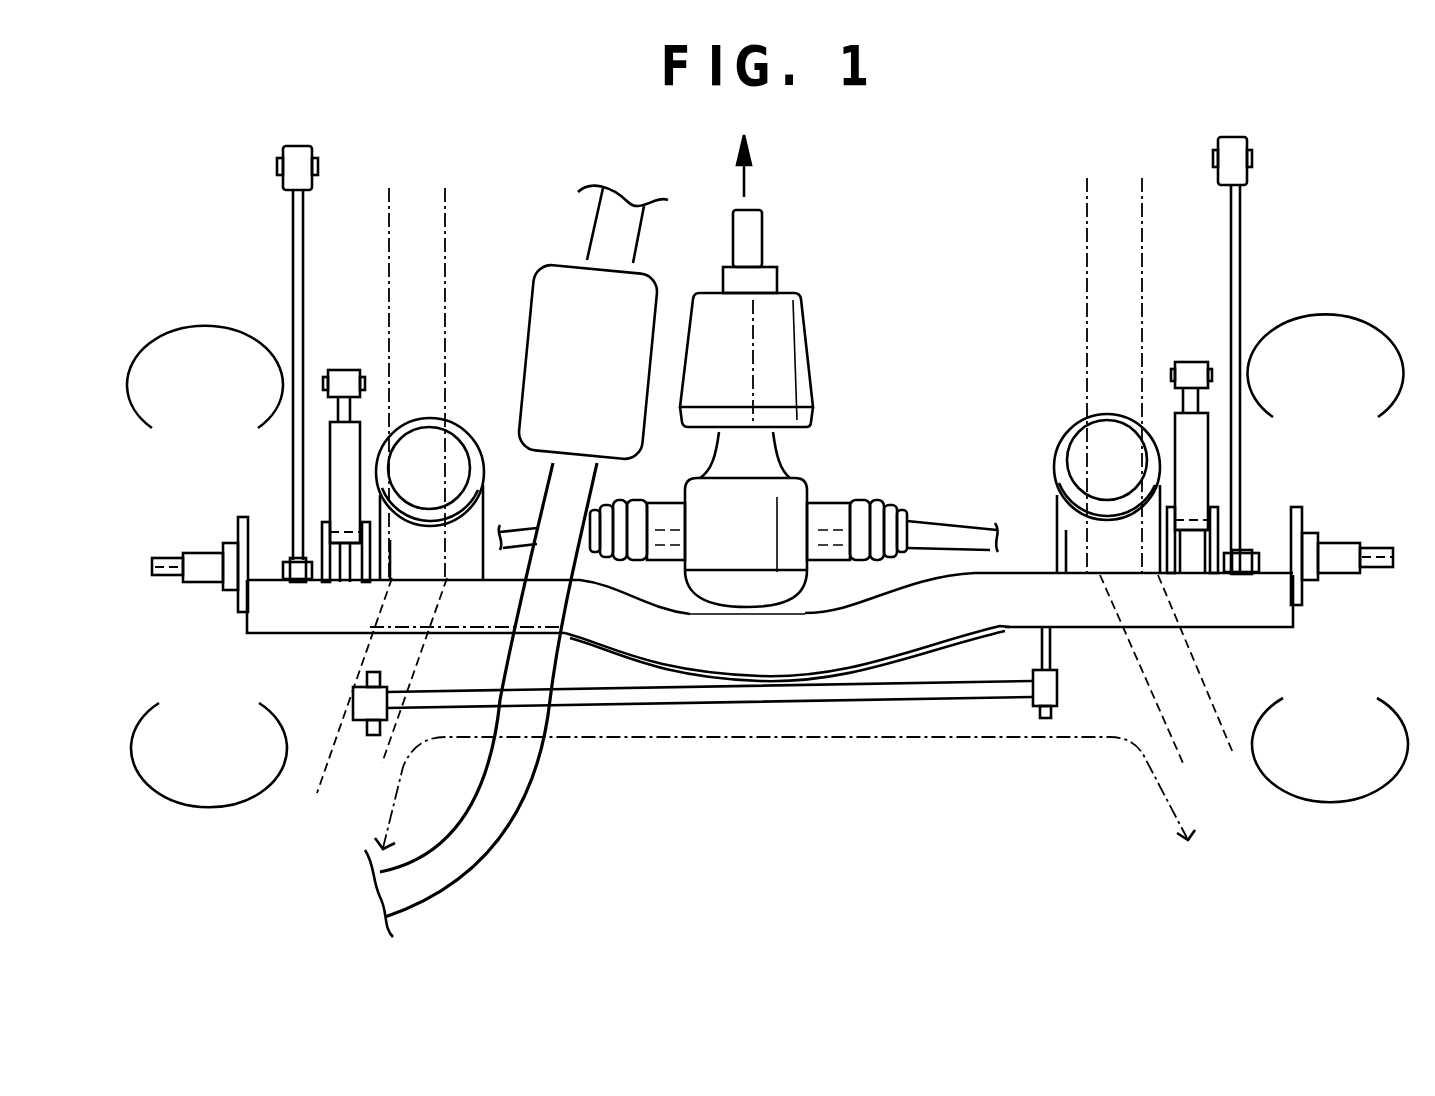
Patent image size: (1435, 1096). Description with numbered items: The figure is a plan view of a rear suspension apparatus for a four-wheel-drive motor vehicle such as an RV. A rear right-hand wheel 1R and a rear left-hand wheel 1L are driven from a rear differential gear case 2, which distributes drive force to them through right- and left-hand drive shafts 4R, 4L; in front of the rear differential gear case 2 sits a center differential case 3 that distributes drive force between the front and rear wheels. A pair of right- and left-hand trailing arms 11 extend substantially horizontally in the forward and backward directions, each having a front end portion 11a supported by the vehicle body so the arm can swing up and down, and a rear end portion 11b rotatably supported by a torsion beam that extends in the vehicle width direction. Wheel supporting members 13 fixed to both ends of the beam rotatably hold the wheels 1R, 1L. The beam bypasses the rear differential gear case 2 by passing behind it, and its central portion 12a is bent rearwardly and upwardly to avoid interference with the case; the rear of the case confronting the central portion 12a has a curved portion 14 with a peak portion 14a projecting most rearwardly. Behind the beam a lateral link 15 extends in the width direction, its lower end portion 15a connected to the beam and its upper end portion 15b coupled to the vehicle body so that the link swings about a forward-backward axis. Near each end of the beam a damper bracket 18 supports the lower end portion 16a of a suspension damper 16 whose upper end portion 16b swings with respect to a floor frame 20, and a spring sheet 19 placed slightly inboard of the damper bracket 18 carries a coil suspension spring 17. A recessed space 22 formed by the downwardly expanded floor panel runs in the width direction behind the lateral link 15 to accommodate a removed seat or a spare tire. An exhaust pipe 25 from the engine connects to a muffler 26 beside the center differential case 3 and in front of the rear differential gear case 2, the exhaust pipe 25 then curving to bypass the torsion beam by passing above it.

The rear left-hand wheel 1L is at (228, 810).
The rear right-hand wheel 1R is at (1322, 805).
The rear differential gear case 2 is at (810, 478).
The center differential case 3 is at (810, 388).
The left-hand drive shaft 4L is at (520, 527).
The right-hand drive shaft 4R is at (938, 520).
The trailing arm 11 is at (1240, 255).
The front end portion of trailing arm 11a is at (1236, 137).
The rear end portion of trailing arm 11b is at (1262, 574).
The central portion of torsion beam 12a is at (808, 650).
The wheel supporting member 13 is at (1302, 517).
The curved portion 14 is at (796, 594).
The peak portion 14a is at (724, 606).
The lateral link 15 is at (582, 700).
The lower end portion of lateral link 15a is at (1057, 690).
The upper end portion of lateral link 15b is at (354, 735).
The suspension damper 16 is at (1200, 450).
The lower end portion of damper 16a is at (1212, 540).
The upper end portion of damper 16b is at (1192, 362).
The suspension spring 17 is at (1068, 428).
The damper bracket 18 is at (1203, 573).
The spring sheet 19 is at (1056, 515).
The floor frame 20 is at (1085, 297).
The recessed space 22 is at (922, 733).
The exhaust pipe 25 is at (487, 850).
The muffler 26 is at (573, 265).